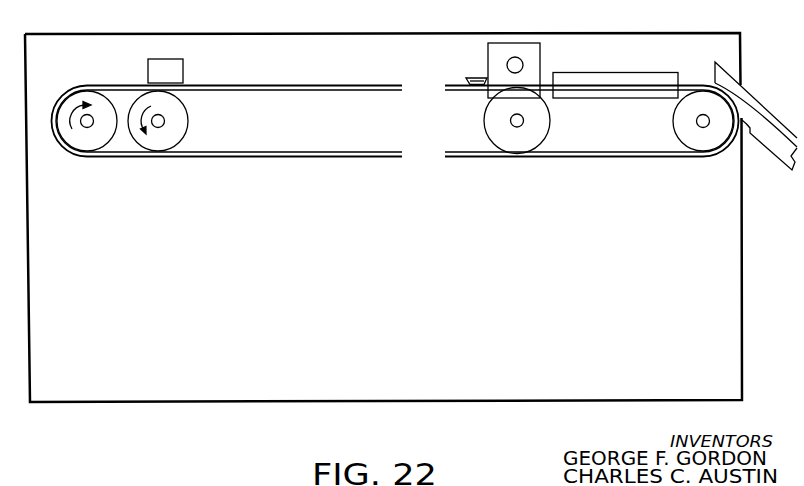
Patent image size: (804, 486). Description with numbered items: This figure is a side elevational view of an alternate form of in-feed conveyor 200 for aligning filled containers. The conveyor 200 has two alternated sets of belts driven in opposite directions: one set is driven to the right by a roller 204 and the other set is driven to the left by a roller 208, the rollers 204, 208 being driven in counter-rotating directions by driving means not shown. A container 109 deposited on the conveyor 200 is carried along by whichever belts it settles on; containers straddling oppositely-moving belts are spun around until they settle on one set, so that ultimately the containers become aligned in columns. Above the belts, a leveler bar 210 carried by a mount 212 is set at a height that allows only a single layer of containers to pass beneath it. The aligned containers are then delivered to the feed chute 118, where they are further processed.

The conveyor 200 is at (270, 175).
The roller 204 is at (168, 138).
The roller 208 is at (90, 139).
The leveler bar 210 is at (520, 60).
The mount 212 is at (488, 57).
The container 109 is at (477, 85).
The feed chute 118 is at (750, 93).